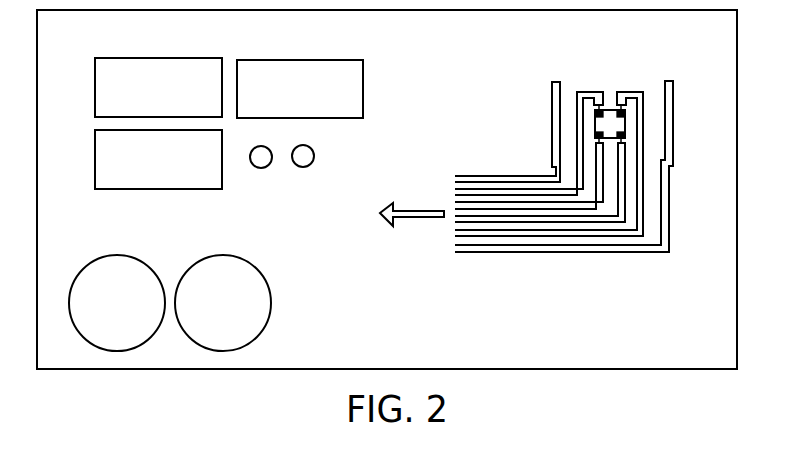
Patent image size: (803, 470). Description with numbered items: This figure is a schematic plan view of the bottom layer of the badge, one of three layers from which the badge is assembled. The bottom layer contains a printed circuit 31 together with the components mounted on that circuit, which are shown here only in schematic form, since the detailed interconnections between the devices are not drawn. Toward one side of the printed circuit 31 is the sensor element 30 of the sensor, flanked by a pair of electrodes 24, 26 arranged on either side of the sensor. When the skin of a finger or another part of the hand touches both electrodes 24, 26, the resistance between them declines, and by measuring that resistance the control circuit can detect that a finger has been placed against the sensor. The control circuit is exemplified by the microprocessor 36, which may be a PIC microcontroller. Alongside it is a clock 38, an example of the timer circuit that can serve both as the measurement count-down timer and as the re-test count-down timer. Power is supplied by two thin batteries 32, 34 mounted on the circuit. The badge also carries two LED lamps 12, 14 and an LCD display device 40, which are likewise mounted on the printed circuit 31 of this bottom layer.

The LED lamp 12 is at (262, 168).
The LED lamp 14 is at (303, 167).
The electrode 24 is at (552, 107).
The electrode 26 is at (673, 130).
The sensor element 30 is at (612, 110).
The printed circuit 31 is at (688, 369).
The thin battery 32 is at (117, 255).
The thin battery 34 is at (271, 295).
The microprocessor 36 is at (173, 189).
The clock 38 is at (308, 60).
The LCD display device 40 is at (170, 58).